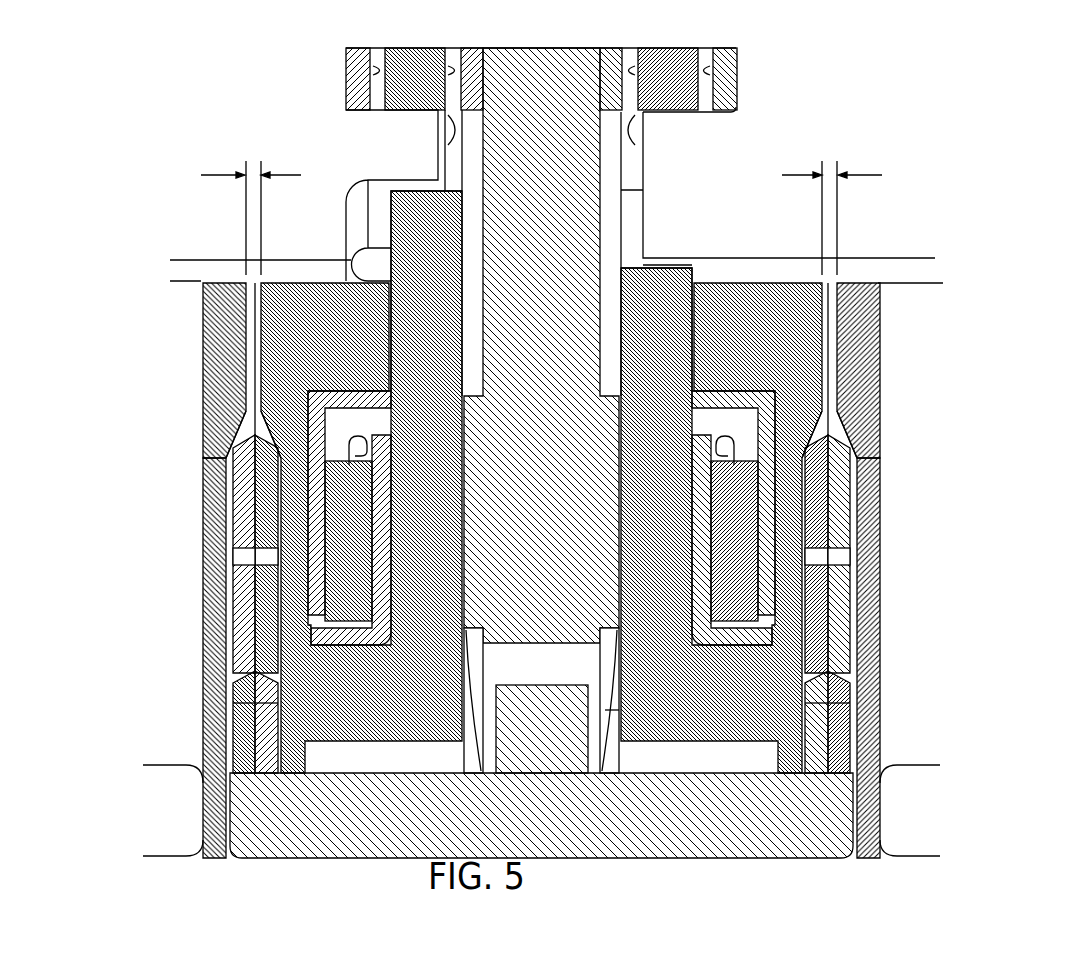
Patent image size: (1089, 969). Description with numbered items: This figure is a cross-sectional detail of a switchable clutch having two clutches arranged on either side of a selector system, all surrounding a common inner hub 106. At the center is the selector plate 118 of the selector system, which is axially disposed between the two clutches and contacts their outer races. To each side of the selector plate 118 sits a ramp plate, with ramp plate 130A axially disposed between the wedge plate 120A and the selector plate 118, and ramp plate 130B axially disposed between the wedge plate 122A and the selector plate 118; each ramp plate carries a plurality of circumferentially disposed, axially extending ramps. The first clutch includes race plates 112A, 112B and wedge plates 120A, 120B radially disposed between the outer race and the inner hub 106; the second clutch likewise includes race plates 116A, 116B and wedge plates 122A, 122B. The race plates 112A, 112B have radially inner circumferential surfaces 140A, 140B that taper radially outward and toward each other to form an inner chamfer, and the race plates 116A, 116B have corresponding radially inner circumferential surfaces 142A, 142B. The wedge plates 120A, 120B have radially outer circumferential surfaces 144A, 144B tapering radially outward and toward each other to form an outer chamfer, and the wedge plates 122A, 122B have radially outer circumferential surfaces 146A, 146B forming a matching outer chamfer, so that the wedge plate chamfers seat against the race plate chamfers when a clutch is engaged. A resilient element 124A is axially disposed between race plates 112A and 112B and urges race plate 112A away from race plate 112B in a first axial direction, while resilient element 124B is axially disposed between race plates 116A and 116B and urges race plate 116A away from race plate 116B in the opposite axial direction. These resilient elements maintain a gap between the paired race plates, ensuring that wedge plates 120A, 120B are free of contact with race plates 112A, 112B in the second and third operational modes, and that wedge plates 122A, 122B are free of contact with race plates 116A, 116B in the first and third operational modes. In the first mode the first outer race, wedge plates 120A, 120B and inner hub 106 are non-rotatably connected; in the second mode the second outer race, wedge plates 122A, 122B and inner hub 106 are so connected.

The inner hub 106 is at (512, 783).
The selector plate 118 is at (505, 127).
The race plate 112A is at (310, 280).
The race plate 112B is at (210, 290).
The race plate 116A is at (748, 285).
The race plate 116B is at (848, 285).
The resilient element 124A is at (240, 337).
The resilient element 124B is at (840, 342).
The ramp plate 130A is at (423, 213).
The ramp plate 130B is at (645, 307).
The radially inner circumferential surface 140A is at (253, 412).
The radially inner circumferential surface 140B is at (238, 413).
The radially inner circumferential surface 142A is at (812, 413).
The radially inner circumferential surface 142B is at (840, 400).
The radially outer circumferential surface 144A is at (267, 443).
The radially outer circumferential surface 144B is at (220, 433).
The radially outer circumferential surface 146A is at (798, 432).
The radially outer circumferential surface 146B is at (870, 427).
The wedge plate 120A is at (240, 767).
The wedge plate 120B is at (237, 773).
The wedge plate 122A is at (810, 762).
The wedge plate 122B is at (833, 762).